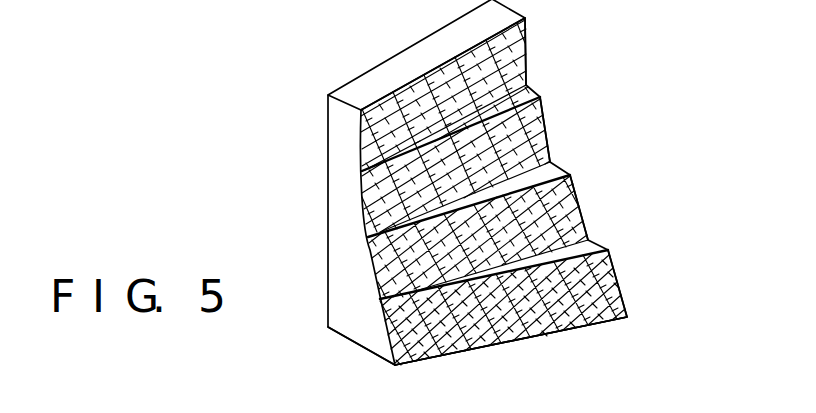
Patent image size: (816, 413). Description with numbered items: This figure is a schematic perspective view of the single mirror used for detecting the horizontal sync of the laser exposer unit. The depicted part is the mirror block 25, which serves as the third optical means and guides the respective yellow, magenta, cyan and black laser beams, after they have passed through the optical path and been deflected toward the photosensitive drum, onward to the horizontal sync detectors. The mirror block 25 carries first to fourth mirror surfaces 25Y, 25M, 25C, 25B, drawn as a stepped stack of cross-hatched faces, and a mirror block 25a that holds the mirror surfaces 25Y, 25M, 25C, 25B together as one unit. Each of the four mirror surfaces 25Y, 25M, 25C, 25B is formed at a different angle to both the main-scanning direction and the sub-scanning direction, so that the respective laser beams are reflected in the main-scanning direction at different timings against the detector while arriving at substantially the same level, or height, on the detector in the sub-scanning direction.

The mirror block 25 is at (325, 223).
The mirror block 25a is at (353, 332).
The first mirror surface 25Y is at (527, 58).
The second mirror surface 25M is at (547, 140).
The third mirror surface 25C is at (570, 213).
The fourth mirror surface 25B is at (609, 290).